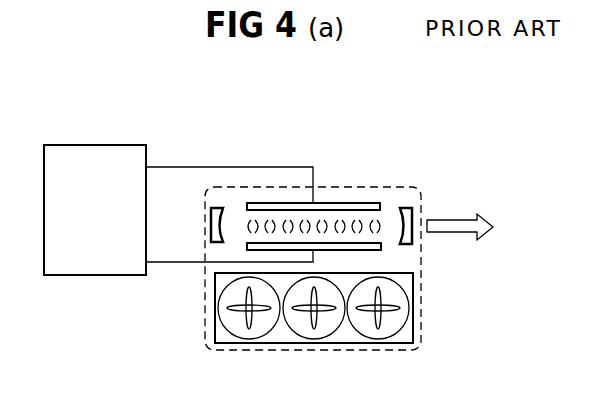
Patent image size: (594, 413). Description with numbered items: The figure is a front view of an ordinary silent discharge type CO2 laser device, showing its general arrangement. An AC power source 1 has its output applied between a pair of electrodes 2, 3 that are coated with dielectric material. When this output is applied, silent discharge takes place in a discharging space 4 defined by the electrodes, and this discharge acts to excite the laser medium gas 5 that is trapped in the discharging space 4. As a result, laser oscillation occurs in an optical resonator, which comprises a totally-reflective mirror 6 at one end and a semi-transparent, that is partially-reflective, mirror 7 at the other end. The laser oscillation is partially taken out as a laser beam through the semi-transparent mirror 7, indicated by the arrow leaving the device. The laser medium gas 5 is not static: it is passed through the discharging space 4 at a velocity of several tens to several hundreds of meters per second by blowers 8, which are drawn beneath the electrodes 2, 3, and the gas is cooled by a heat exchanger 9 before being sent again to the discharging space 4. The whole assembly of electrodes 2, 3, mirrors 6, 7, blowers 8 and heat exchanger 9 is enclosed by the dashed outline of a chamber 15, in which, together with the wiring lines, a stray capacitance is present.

The AC power source 1 is at (63, 145).
The electrode 2 is at (335, 203).
The electrode 3 is at (377, 251).
The discharging space 4 is at (364, 220).
The laser medium gas 5 is at (279, 195).
The totally-reflective mirror 6 is at (210, 227).
The semi-transparent mirror 7 is at (413, 218).
The blowers 8 is at (221, 324).
The heat exchanger 9 is at (381, 345).
The chamber 15 is at (293, 351).